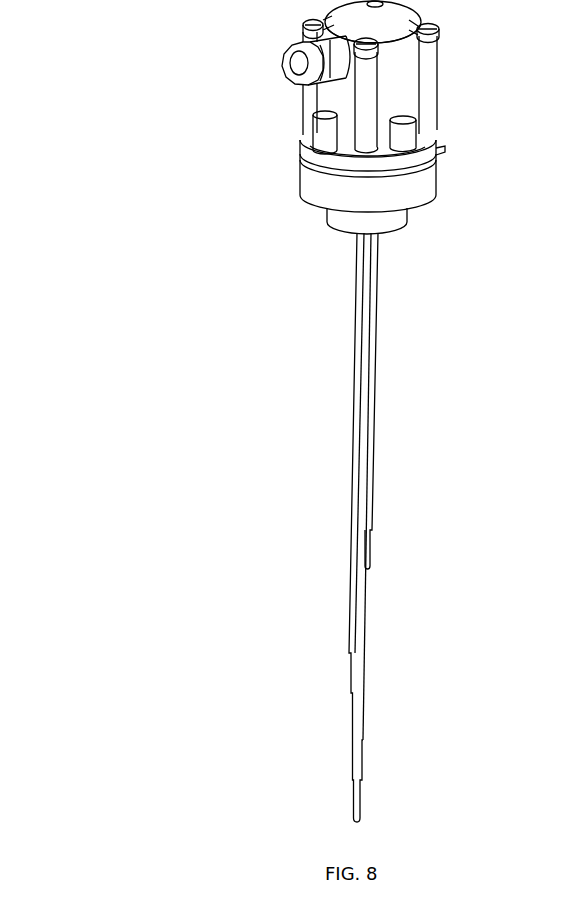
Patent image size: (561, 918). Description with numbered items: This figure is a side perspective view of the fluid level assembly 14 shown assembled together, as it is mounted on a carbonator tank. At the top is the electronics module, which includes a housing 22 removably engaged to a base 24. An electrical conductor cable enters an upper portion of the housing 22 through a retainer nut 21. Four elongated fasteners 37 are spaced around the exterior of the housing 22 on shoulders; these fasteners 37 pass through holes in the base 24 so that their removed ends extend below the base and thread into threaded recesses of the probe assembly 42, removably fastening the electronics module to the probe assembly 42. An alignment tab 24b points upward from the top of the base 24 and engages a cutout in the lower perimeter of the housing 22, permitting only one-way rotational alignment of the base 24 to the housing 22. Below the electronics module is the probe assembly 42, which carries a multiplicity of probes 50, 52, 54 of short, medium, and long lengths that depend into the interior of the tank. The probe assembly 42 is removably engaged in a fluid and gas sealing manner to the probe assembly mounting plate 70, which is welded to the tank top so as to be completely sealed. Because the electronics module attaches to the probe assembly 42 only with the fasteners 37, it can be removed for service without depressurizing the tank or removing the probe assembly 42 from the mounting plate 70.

The fluid level assembly 14 is at (158, 175).
The retainer nut 21 is at (290, 46).
The housing 22 is at (449, 88).
The base 24 is at (430, 165).
The alignment tab 24b is at (440, 152).
The elongated fasteners 37 is at (437, 22).
The probe assembly 42 is at (423, 185).
The probe assembly mounting plate 70 is at (400, 216).
The short probe 50 is at (400, 372).
The medium probe 52 is at (363, 486).
The long probe 54 is at (371, 401).